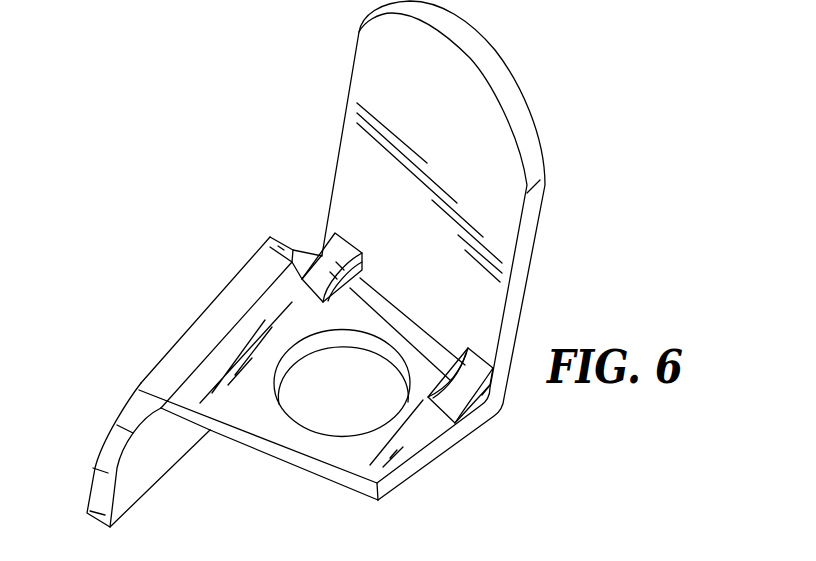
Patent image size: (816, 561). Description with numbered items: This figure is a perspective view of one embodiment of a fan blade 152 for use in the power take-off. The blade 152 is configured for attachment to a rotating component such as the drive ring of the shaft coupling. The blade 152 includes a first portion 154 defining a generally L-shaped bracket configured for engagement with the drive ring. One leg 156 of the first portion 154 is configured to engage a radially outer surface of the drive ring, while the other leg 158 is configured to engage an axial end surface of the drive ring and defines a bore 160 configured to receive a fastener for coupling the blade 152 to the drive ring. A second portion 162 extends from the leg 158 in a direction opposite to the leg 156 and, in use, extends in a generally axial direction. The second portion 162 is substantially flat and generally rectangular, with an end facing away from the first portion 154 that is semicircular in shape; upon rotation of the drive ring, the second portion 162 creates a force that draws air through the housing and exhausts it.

The blade 152 is at (247, 172).
The first portion 154 is at (160, 380).
The leg 156 is at (108, 457).
The leg 158 is at (263, 420).
The bore 160 is at (380, 410).
The second portion 162 is at (367, 88).